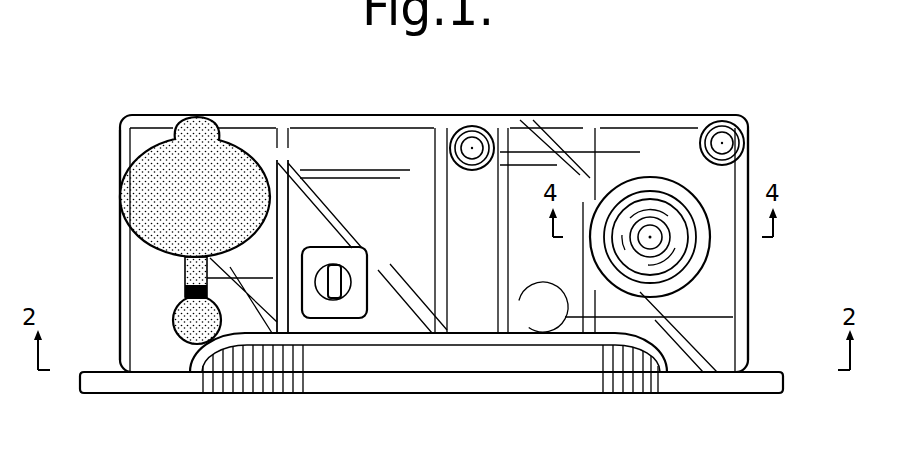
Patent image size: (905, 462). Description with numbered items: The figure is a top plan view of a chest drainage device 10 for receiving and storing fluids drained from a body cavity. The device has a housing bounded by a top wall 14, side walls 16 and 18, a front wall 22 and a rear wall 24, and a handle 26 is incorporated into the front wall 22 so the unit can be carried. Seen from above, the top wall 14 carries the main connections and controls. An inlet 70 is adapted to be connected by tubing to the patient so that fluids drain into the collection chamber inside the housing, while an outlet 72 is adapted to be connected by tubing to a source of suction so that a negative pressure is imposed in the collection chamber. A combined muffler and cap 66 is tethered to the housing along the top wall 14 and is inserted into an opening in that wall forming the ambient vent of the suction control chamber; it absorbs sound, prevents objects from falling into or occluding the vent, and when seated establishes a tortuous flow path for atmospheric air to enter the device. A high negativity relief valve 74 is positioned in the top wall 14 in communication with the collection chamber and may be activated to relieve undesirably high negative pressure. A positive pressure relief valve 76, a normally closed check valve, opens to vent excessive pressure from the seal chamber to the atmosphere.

The chest drainage device 10 is at (714, 96).
The top wall 14 is at (316, 134).
The side wall 16 is at (121, 251).
The side wall 18 is at (748, 284).
The front wall 22 is at (716, 396).
The rear wall 24 is at (284, 114).
The handle 26 is at (343, 371).
The combined muffler and cap 66 is at (135, 184).
The inlet 70 is at (738, 122).
The outlet 72 is at (478, 128).
The high negativity relief valve 74 is at (648, 175).
The positive pressure relief valve 76 is at (364, 256).